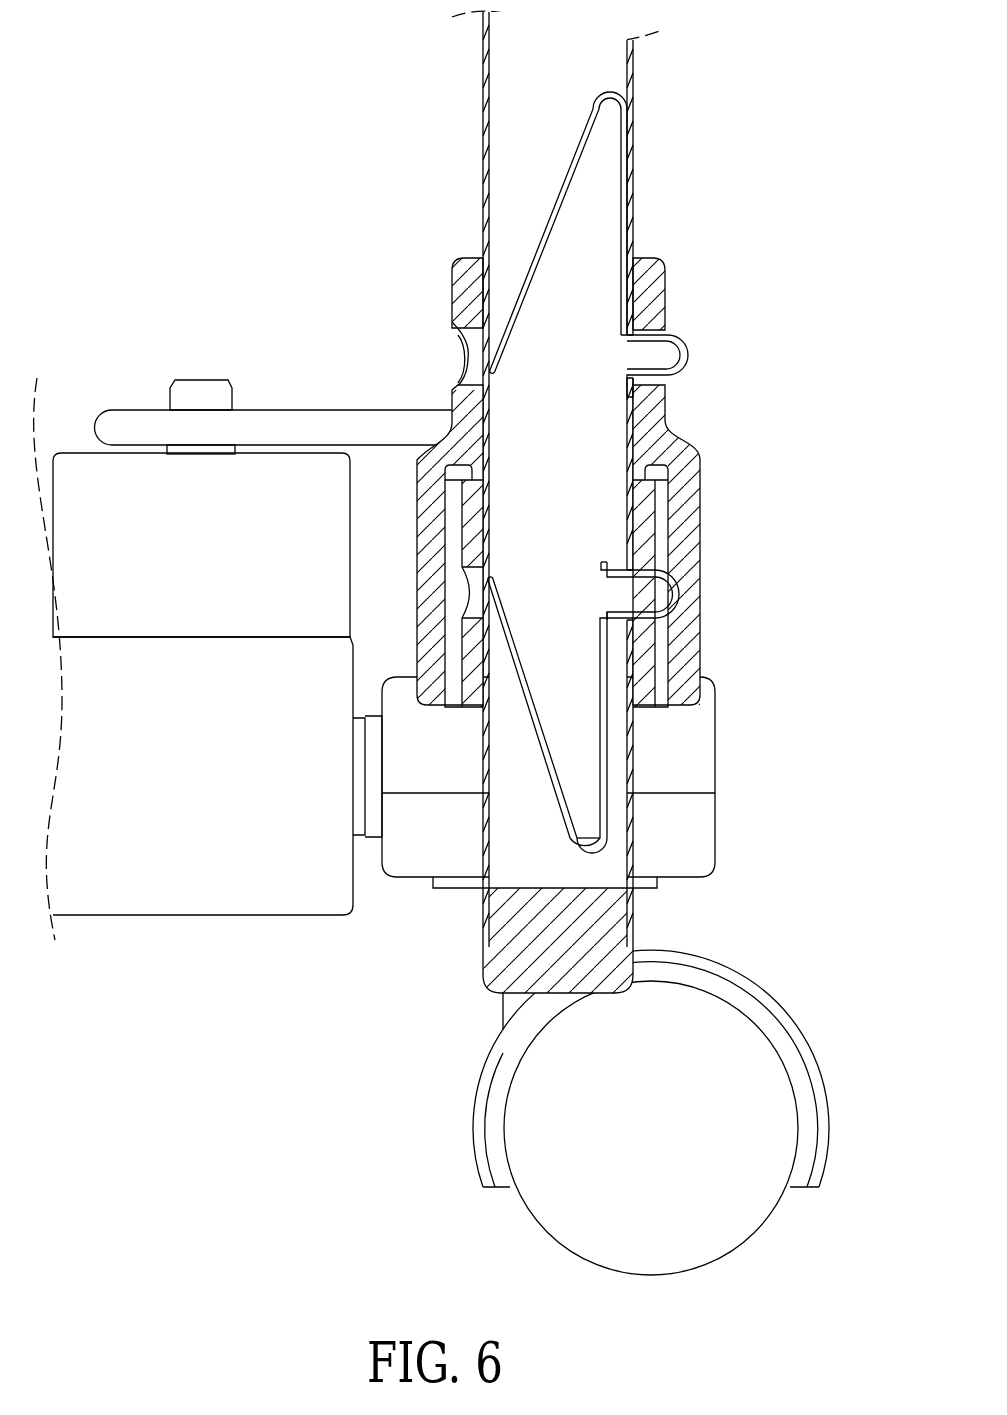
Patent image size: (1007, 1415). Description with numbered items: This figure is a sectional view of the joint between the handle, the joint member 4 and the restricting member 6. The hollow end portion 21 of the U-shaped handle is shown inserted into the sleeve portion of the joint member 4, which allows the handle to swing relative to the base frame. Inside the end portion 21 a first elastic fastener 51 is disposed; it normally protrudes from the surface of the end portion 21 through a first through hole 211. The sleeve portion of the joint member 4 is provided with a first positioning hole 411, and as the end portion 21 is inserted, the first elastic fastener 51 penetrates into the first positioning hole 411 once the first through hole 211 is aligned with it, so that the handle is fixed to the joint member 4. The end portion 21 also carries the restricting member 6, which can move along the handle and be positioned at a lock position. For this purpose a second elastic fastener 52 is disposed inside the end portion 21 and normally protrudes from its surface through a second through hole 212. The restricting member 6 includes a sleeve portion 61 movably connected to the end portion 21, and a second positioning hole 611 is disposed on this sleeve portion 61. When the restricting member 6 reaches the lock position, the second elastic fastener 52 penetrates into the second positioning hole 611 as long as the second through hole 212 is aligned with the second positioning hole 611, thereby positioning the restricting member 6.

The end portion 21 is at (633, 80).
The second elastic fastener 52 is at (633, 148).
The sleeve portion 61 is at (657, 300).
The second through hole 212 is at (650, 336).
The second positioning hole 611 is at (655, 368).
The restricting member 6 is at (645, 403).
The joint member 4 is at (648, 512).
The first positioning hole 411 is at (660, 592).
The first through hole 211 is at (650, 608).
The first elastic fastener 51 is at (608, 762).